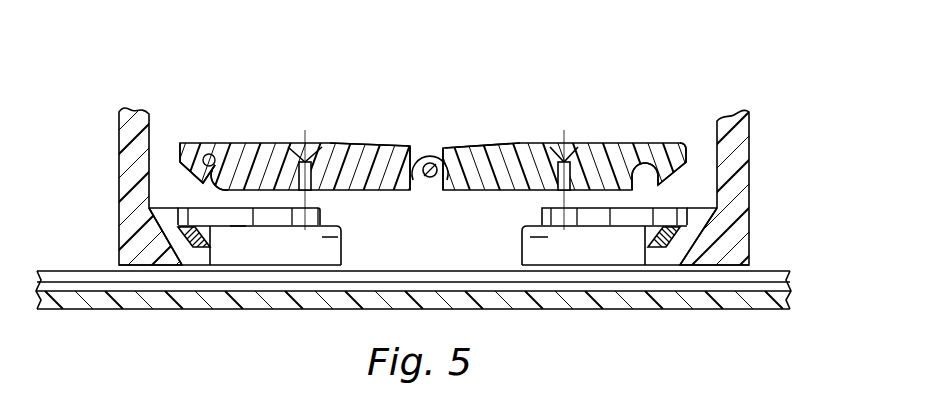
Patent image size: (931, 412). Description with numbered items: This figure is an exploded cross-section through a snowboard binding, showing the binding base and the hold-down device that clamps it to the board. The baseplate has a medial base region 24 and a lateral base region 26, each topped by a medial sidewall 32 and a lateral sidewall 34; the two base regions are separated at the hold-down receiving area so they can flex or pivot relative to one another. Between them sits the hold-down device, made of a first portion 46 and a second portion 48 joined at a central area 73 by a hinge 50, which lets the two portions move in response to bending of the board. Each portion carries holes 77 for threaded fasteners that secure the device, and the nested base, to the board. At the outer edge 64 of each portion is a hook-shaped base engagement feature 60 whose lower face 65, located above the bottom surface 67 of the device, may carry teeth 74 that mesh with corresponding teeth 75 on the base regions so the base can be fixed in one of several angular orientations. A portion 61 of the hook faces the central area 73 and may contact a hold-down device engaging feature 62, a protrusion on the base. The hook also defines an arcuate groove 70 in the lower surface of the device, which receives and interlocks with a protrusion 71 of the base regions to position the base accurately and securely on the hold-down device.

The medial base region 24 is at (160, 208).
The lateral base region 26 is at (705, 208).
The medial sidewall 32 is at (150, 128).
The lateral sidewall 34 is at (717, 118).
The first portion 46 is at (343, 143).
The second portion 48 is at (512, 143).
The hinge 50 is at (438, 147).
The hook-shaped base engagement feature 60 is at (217, 160).
The portion of the hook-shaped feature 61 is at (209, 160).
The hold-down device engaging feature 62 is at (237, 233).
The outer edge 64 is at (184, 150).
The lower face 65 is at (181, 174).
The bottom surface 67 is at (383, 191).
The arcuate groove 70 is at (216, 167).
The protrusion 71 is at (218, 233).
The central area 73 is at (388, 143).
The teeth 74 is at (419, 176).
The teeth 75 is at (193, 233).
The holes 77 is at (297, 153).